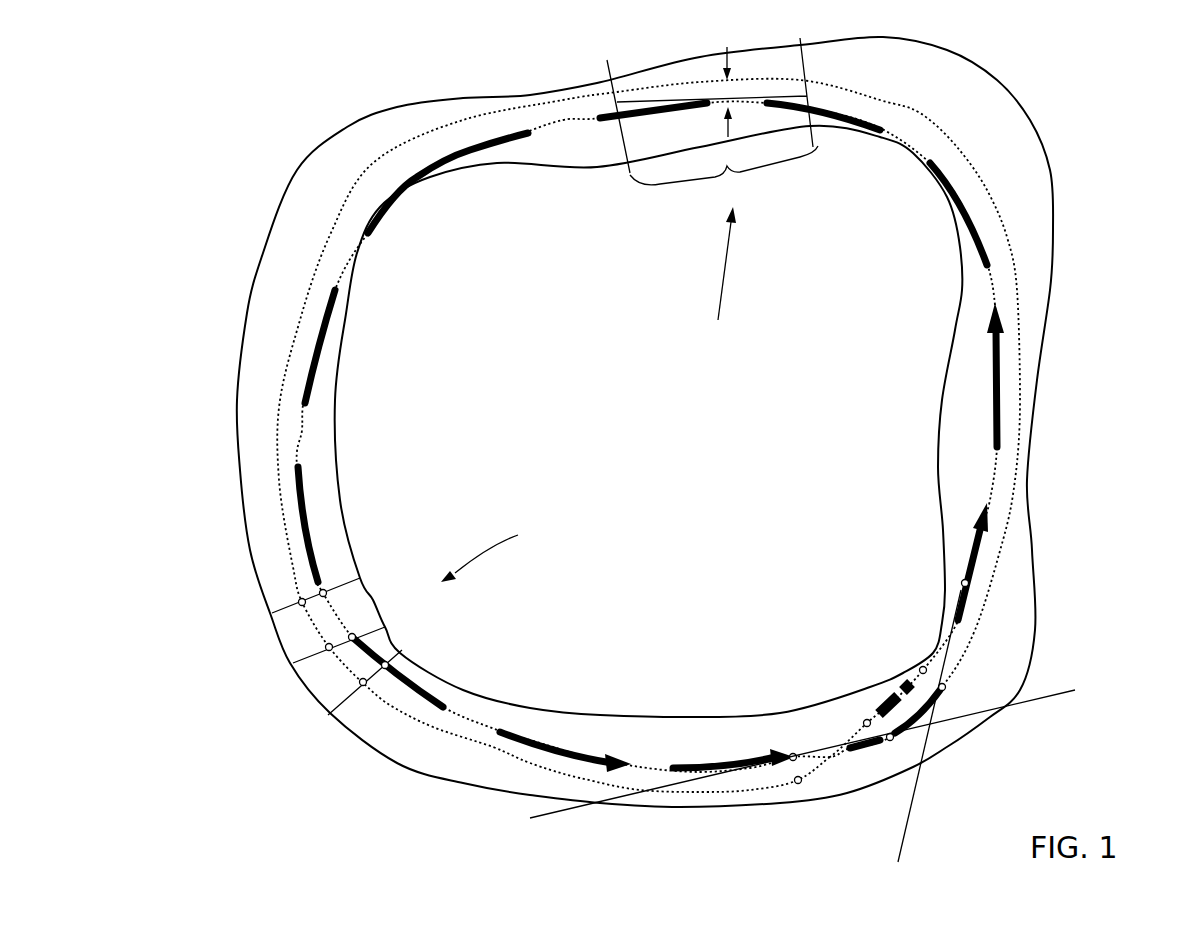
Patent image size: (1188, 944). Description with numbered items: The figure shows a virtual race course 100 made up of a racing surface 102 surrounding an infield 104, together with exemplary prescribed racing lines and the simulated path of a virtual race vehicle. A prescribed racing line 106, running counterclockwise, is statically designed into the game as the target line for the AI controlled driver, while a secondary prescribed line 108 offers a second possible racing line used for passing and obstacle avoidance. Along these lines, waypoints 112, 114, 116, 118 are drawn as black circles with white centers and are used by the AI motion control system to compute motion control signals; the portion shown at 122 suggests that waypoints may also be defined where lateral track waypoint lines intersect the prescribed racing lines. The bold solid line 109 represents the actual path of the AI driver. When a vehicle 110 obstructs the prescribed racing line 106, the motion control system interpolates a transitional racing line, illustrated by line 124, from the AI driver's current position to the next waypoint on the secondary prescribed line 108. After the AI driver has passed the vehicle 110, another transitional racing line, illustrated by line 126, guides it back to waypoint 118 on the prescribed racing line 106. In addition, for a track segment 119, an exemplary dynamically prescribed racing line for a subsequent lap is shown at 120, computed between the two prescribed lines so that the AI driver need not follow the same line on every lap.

The virtual race course 100 is at (648, 460).
The racing surface 102 is at (263, 547).
The infield 104 is at (495, 643).
The prescribed racing line 106 is at (300, 423).
The secondary prescribed line 108 is at (1013, 497).
The actual path of the AI driver 109 is at (323, 313).
The vehicle 110 is at (890, 693).
The waypoint 112 is at (793, 757).
The waypoint 114 is at (890, 737).
The waypoint 116 is at (942, 687).
The waypoint 118 is at (965, 583).
The track segment 119 is at (718, 320).
The dynamically prescribed racing line 120 is at (710, 97).
The portion showing lateral track waypoint lines 122 is at (500, 555).
The transitional racing line 124 is at (562, 812).
The transitional racing line 126 is at (913, 822).